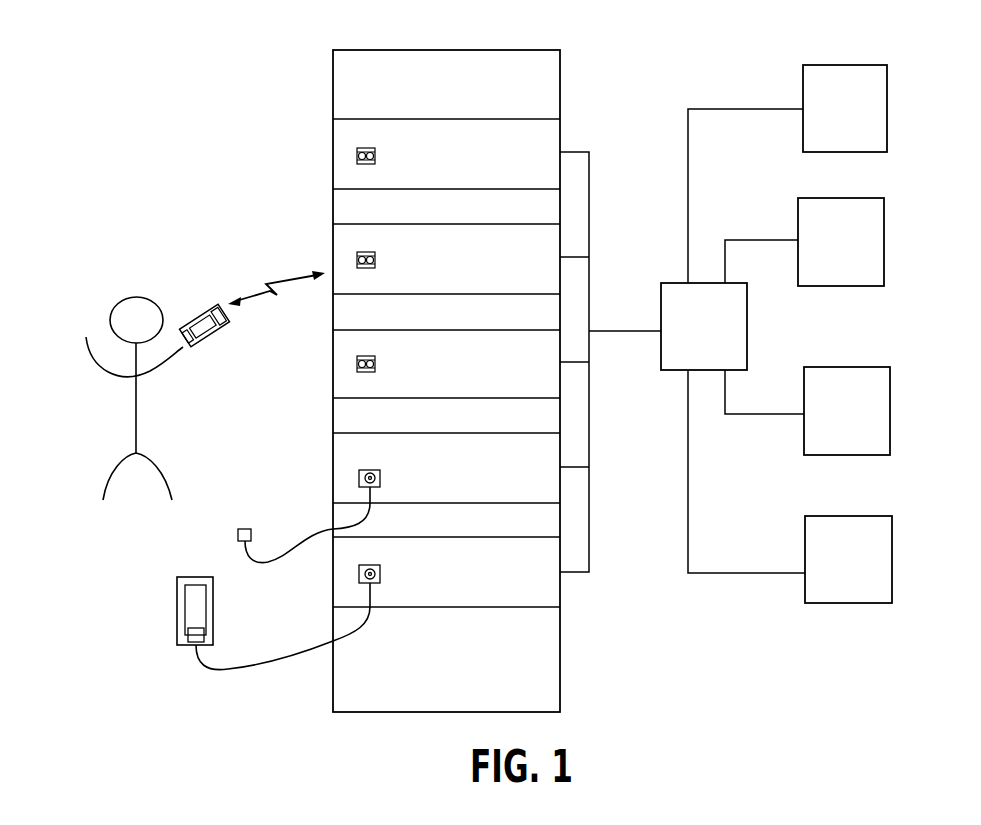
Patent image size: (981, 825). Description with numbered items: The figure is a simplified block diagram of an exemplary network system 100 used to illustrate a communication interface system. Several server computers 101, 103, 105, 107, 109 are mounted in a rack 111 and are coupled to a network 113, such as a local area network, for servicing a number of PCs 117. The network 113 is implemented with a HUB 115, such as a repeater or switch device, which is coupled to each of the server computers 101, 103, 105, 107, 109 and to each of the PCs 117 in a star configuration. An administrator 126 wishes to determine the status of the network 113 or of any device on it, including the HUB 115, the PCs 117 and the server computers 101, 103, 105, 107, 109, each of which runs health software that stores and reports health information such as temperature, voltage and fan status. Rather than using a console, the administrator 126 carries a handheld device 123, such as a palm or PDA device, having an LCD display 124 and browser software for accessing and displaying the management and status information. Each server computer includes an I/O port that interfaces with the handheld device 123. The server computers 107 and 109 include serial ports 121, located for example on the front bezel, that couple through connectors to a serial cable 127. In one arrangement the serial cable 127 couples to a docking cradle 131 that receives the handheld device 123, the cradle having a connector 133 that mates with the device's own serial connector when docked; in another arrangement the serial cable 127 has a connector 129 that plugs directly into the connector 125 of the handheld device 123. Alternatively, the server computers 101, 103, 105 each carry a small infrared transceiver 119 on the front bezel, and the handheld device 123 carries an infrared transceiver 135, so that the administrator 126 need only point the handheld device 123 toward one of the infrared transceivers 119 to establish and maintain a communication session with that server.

The network system 100 is at (170, 105).
The rack 111 is at (460, 49).
The network 113 is at (644, 90).
The server computer 101 is at (461, 165).
The server computer 103 is at (461, 269).
The server computer 105 is at (461, 373).
The server computer 107 is at (464, 479).
The server computer 109 is at (464, 584).
The HUB 115 is at (721, 354).
The computer system (PC) 117 is at (861, 134).
The infrared transceiver 119 is at (404, 358).
The serial port 121 is at (406, 570).
The handheld device 123 is at (197, 318).
The LCD display 124 is at (215, 345).
The connector 125 is at (192, 357).
The administrator 126 is at (136, 388).
The serial cable 127 is at (307, 650).
The connector 129 is at (245, 528).
The docking cradle 131 is at (177, 593).
The connector 133 is at (188, 632).
The infrared transceiver 135 is at (237, 331).